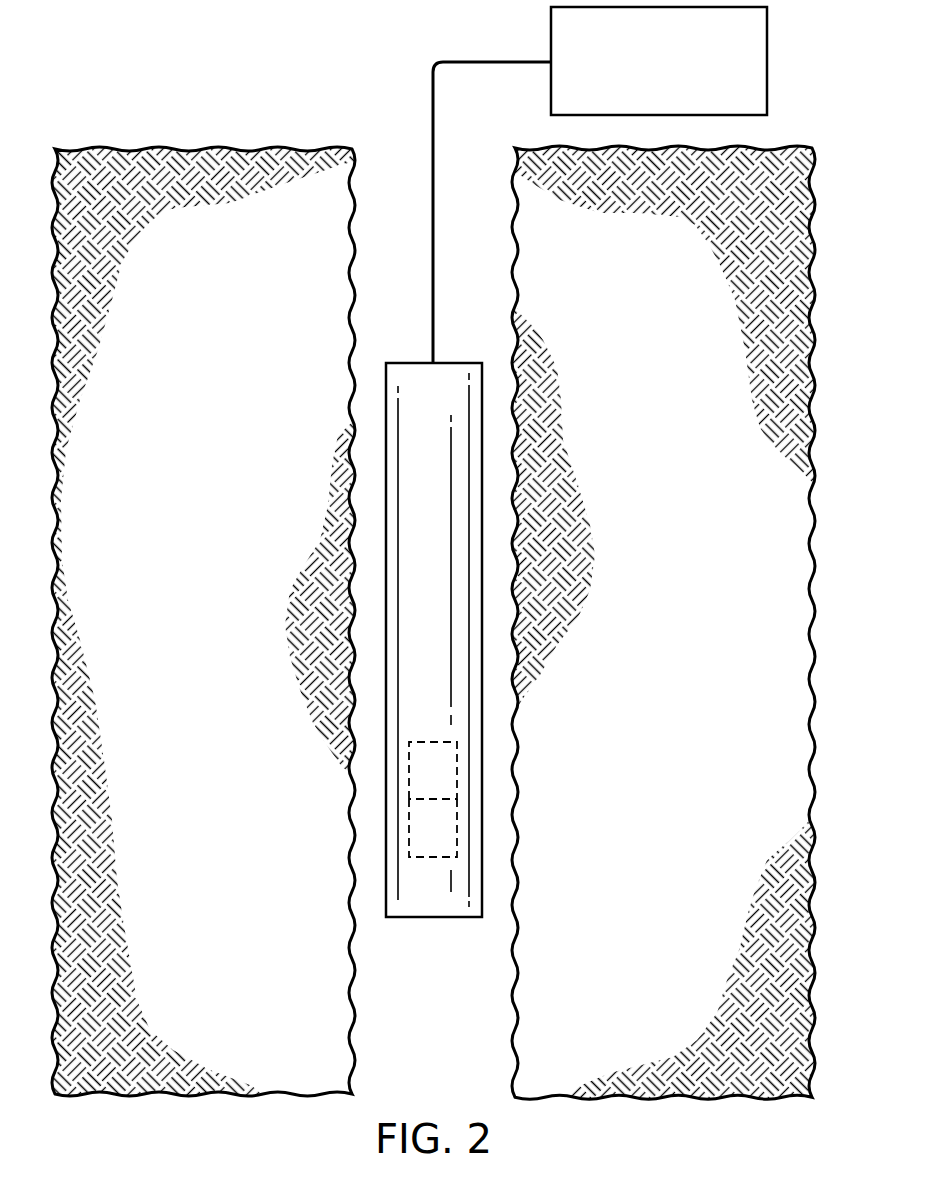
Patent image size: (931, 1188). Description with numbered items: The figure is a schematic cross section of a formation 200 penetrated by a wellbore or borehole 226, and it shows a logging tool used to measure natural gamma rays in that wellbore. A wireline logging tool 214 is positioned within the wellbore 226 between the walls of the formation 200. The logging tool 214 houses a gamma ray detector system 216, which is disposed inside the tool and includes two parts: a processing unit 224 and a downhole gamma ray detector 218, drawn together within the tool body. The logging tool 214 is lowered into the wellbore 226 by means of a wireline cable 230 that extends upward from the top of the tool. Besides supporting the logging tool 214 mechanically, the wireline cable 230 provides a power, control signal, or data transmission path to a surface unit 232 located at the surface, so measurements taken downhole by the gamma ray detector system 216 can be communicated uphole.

The formation 200 is at (703, 606).
The wireline logging tool 214 is at (386, 410).
The gamma ray detector system 216 is at (434, 814).
The downhole gamma ray detector 218 is at (457, 828).
The processing unit 224 is at (457, 769).
The wellbore 226 is at (386, 153).
The wireline cable 230 is at (473, 61).
The surface unit 232 is at (679, 75).